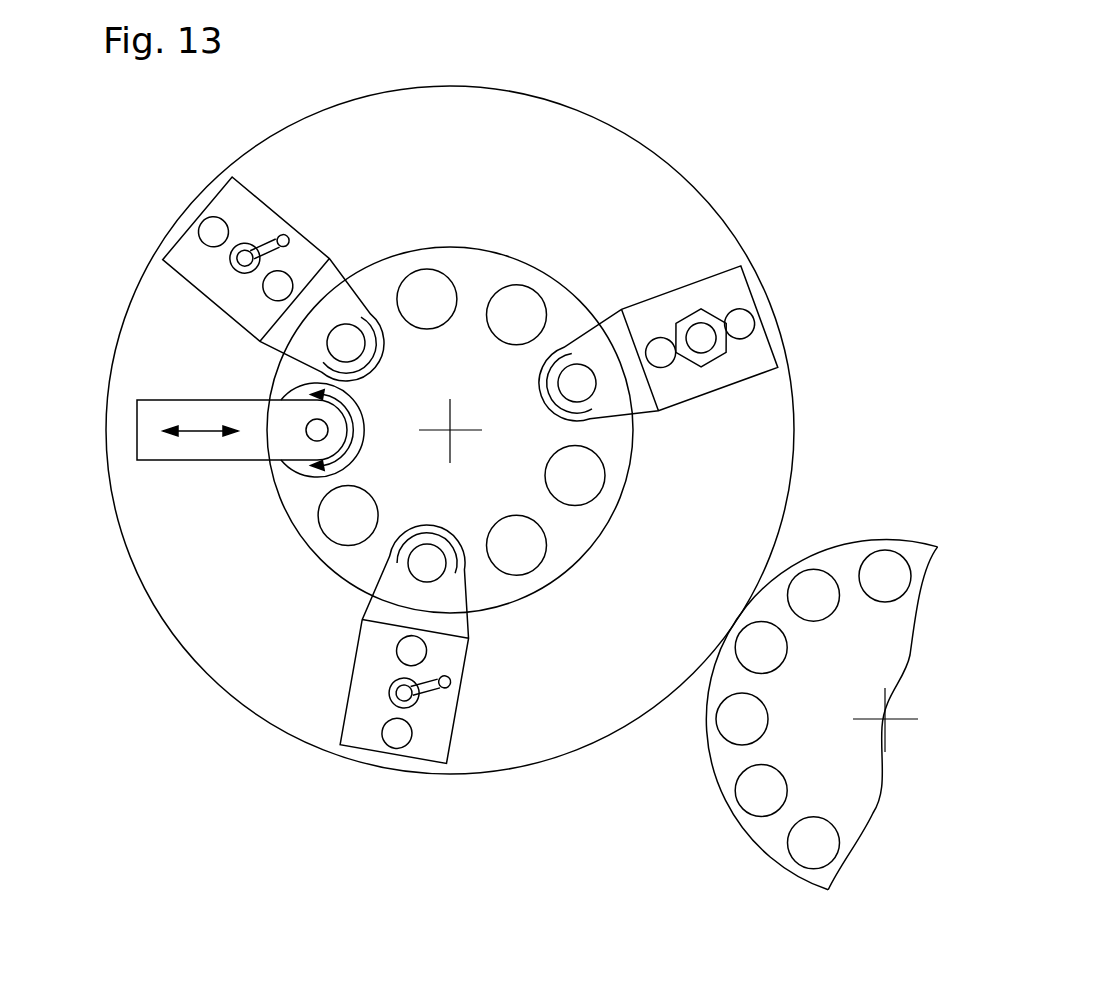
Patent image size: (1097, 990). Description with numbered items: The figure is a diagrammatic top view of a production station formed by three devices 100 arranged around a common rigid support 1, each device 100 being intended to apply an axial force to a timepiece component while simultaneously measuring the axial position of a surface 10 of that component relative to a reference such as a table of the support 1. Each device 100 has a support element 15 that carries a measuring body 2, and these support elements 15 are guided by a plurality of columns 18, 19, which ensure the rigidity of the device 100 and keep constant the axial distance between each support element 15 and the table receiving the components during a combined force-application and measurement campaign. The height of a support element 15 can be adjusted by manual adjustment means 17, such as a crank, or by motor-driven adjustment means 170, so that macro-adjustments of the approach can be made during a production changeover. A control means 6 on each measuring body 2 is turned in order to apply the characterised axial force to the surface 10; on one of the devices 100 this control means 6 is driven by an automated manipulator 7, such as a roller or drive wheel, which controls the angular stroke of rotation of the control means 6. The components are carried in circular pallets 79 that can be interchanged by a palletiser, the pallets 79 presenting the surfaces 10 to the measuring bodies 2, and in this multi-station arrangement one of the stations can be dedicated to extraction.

The support 1 is at (187, 535).
The measuring body 2 is at (427, 563).
The control means 6 is at (377, 327).
The automated manipulator 7 is at (192, 428).
The surface 10 is at (582, 480).
The support element 15 is at (187, 255).
The manual adjustment means 17 is at (446, 685).
The column 18 is at (397, 733).
The column 19 is at (410, 649).
The pallet 79 is at (532, 547).
The device 100 is at (500, 467).
The motor-driven adjustment means 170 is at (710, 317).